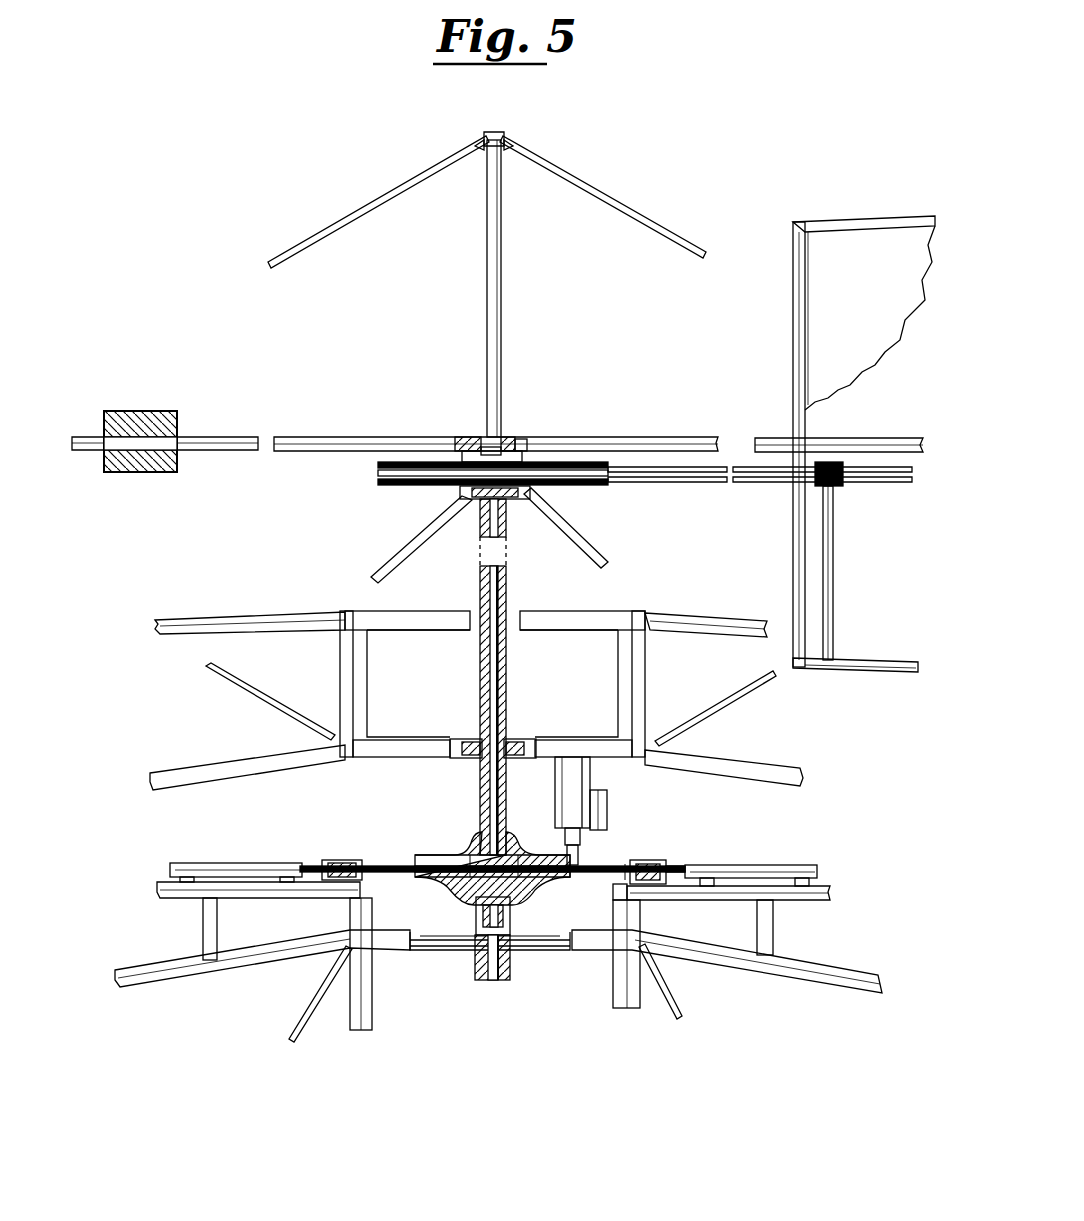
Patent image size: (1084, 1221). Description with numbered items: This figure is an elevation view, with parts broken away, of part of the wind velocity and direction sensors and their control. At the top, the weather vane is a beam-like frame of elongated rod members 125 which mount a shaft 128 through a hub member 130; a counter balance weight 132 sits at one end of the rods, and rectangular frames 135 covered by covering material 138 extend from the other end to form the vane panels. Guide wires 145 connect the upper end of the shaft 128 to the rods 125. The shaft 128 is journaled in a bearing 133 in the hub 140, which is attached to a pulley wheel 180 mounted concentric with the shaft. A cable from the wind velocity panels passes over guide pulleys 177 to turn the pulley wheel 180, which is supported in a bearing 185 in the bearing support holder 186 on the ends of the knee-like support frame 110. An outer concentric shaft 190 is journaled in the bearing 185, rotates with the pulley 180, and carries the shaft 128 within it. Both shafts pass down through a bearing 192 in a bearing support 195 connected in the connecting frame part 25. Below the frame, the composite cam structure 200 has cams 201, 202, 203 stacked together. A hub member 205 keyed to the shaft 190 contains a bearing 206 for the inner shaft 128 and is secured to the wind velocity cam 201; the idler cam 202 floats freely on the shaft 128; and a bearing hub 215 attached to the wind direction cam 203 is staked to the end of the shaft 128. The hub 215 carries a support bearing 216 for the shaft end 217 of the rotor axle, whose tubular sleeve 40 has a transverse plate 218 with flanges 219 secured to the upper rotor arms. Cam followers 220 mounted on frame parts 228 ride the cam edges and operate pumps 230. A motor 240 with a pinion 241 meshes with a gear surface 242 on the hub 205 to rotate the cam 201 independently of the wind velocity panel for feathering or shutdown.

The connecting frame part 25 is at (617, 612).
The tubular sleeve 40 is at (506, 976).
The knee-like support frame 110 is at (602, 548).
The elongated rod members 125 is at (331, 436).
The shaft 128 is at (503, 318).
The hub member 130 is at (505, 438).
The counter balance weight 132 is at (178, 411).
The bearing 133 is at (515, 445).
The rectangular frames 135 is at (873, 672).
The covering material 138 is at (878, 324).
The hub 140 is at (462, 452).
The guide wires 145 is at (628, 204).
The guide pulleys 177 is at (836, 490).
The pulley wheel 180 is at (580, 462).
The bearing 185 is at (478, 508).
The bearing support holder 186 is at (535, 490).
The outer concentric shaft 190 is at (504, 528).
The bearing 192 is at (470, 738).
The bearing support 195 is at (528, 740).
The composite cam structure 200 is at (436, 826).
The cam 201 is at (612, 866).
The cam 202 is at (622, 868).
The cam 203 is at (662, 868).
The hub member 205 is at (470, 842).
The bearing 206 is at (463, 857).
The bearing hub 215 is at (627, 896).
The support bearing 216 is at (540, 896).
The internal shaft member 217 is at (535, 912).
The plate 218 is at (532, 948).
The flanges 219 is at (572, 950).
The cam followers 220 is at (728, 816).
The frame parts 228 is at (772, 926).
The pumps 230 is at (792, 849).
The motor 240 is at (592, 785).
The pinion 241 is at (605, 862).
The gear surface 242 is at (556, 858).